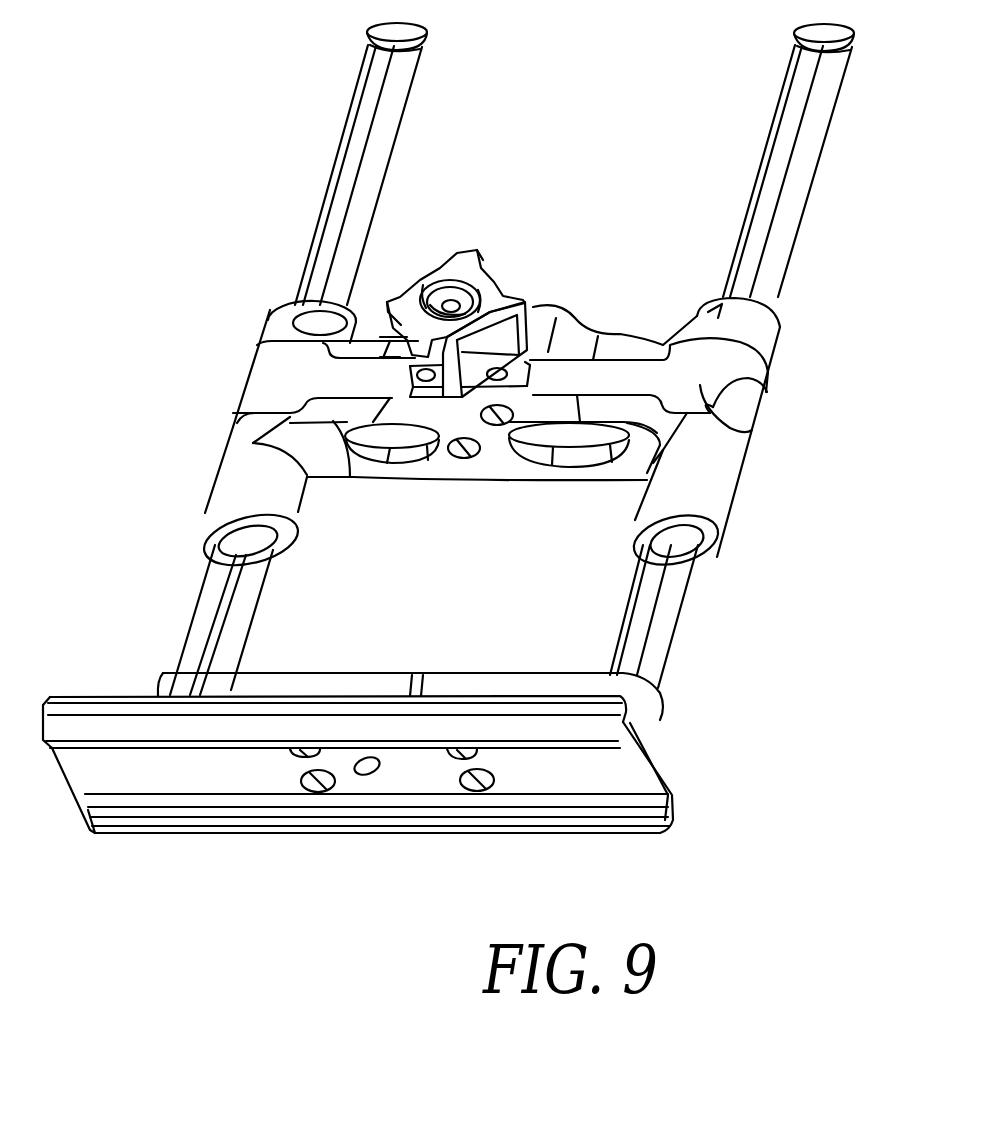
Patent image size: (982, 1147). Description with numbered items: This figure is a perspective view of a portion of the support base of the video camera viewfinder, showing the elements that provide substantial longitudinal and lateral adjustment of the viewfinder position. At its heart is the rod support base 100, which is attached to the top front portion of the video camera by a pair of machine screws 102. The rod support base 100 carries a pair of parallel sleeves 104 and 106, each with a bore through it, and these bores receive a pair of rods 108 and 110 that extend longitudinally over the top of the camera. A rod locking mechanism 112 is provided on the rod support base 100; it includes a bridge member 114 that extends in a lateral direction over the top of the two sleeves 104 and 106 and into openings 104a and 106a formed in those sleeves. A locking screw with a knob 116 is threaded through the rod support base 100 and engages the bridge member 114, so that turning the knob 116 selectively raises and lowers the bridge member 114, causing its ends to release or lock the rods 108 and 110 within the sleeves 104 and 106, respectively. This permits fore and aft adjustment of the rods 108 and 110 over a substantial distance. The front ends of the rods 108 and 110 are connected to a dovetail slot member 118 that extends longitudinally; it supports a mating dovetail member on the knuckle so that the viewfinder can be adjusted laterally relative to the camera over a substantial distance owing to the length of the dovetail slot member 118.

The rod support base 100 is at (437, 475).
The machine screws 102 is at (494, 425).
The sleeve 104 is at (235, 488).
The opening 104a is at (250, 388).
The sleeve 106 is at (697, 480).
The opening 106a is at (742, 381).
The rod 108 is at (205, 618).
The rod 110 is at (667, 622).
The rod locking mechanism 112 is at (521, 258).
The bridge member 114 is at (622, 372).
The knob 116 is at (450, 262).
The dovetail slot member 118 is at (622, 768).